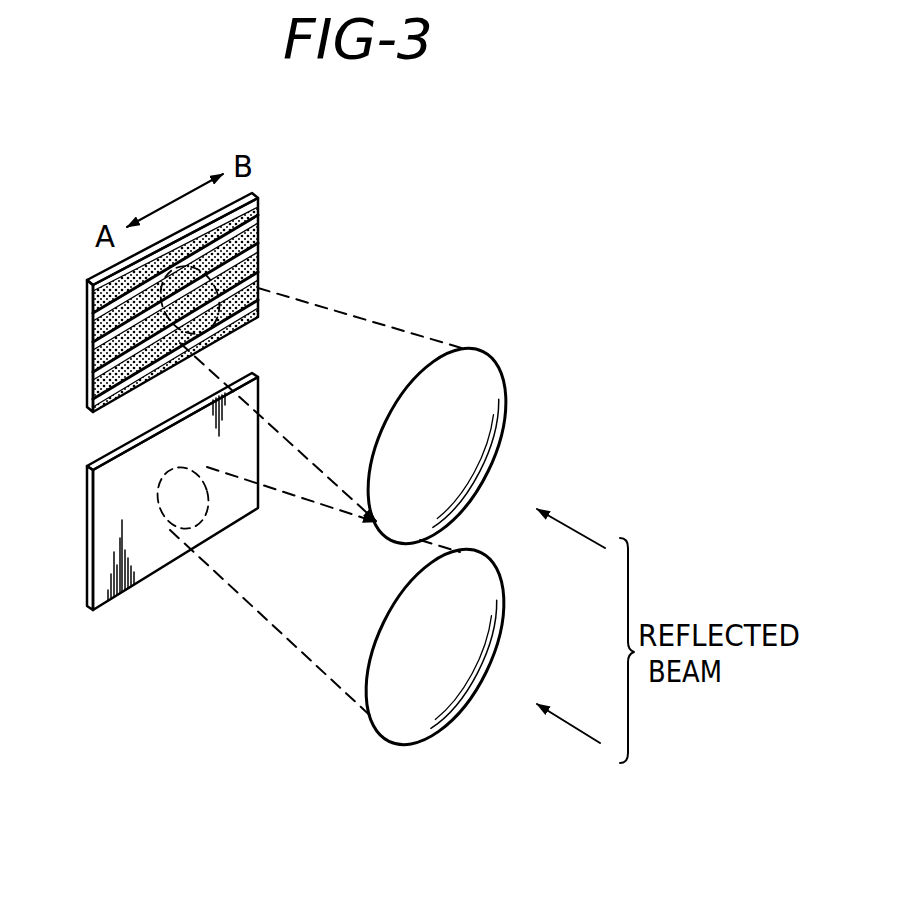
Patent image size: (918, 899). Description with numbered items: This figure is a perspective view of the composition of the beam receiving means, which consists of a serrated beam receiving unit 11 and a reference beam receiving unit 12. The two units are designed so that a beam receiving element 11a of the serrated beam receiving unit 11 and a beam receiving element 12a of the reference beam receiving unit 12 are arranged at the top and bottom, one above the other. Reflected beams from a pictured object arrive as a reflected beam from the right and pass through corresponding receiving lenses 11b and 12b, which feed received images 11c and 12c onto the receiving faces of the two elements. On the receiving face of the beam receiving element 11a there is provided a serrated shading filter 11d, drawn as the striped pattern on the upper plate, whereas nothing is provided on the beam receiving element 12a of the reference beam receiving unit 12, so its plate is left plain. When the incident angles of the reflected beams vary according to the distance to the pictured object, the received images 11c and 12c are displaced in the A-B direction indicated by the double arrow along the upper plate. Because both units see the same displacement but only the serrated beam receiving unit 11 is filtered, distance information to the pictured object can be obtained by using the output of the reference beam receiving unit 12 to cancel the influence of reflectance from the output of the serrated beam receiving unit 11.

The serrated beam receiving unit 11 is at (322, 379).
The beam receiving element 11a is at (88, 353).
The receiving lens 11b is at (510, 382).
The received image 11c is at (227, 310).
The serrated shading filter 11d is at (102, 284).
The reference beam receiving unit 12 is at (252, 660).
The beam receiving element 12a is at (87, 548).
The receiving lens 12b is at (500, 623).
The received image 12c is at (162, 528).